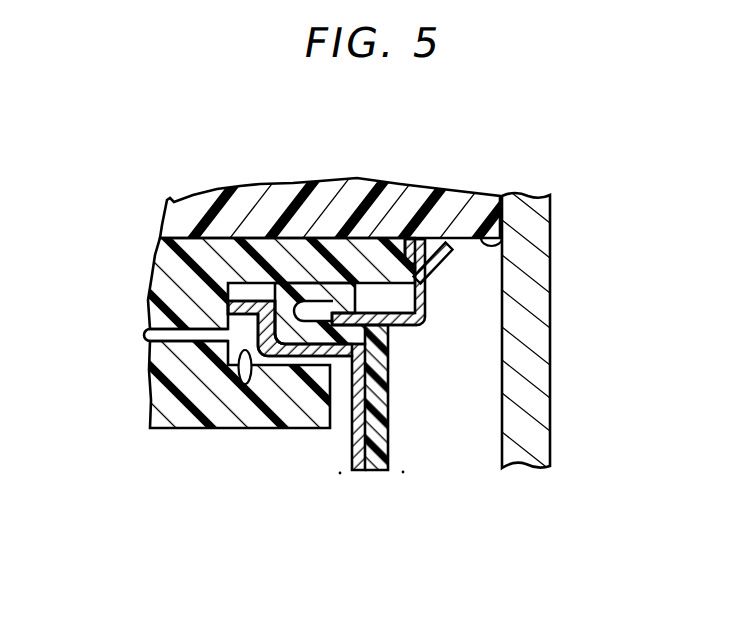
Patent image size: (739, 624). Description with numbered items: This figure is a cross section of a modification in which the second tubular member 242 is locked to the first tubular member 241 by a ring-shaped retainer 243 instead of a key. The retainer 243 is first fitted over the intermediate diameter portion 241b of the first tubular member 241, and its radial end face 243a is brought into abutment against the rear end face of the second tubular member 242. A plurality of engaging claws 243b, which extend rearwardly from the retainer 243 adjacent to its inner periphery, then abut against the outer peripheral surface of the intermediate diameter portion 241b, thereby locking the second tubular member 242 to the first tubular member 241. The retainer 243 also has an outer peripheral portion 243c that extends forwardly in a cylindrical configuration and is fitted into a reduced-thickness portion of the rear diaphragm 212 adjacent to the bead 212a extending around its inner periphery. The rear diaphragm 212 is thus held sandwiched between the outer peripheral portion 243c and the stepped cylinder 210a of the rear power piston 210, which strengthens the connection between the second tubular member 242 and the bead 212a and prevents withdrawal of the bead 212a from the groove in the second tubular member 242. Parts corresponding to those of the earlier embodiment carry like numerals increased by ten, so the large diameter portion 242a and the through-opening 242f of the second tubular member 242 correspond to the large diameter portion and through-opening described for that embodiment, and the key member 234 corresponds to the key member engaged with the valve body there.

The rear power piston 210 is at (353, 450).
The stepped cylinder of rear power piston 210a is at (280, 362).
The rear diaphragm 212 is at (378, 470).
The bead of rear diaphragm 212a is at (322, 286).
The support post 234 is at (537, 341).
The first tubular member 241 is at (230, 172).
The intermediate diameter portion of first tubular member 241b is at (500, 247).
The second tubular member 242 is at (175, 438).
The projection of lower block 242a is at (245, 385).
The slot of lower block 242f is at (152, 335).
The ring-shaped retainer 243 is at (434, 338).
The radial end face of retainer 243a is at (413, 239).
The engaging claws 243b is at (452, 271).
The outer peripheral portion of retainer 243c is at (397, 327).